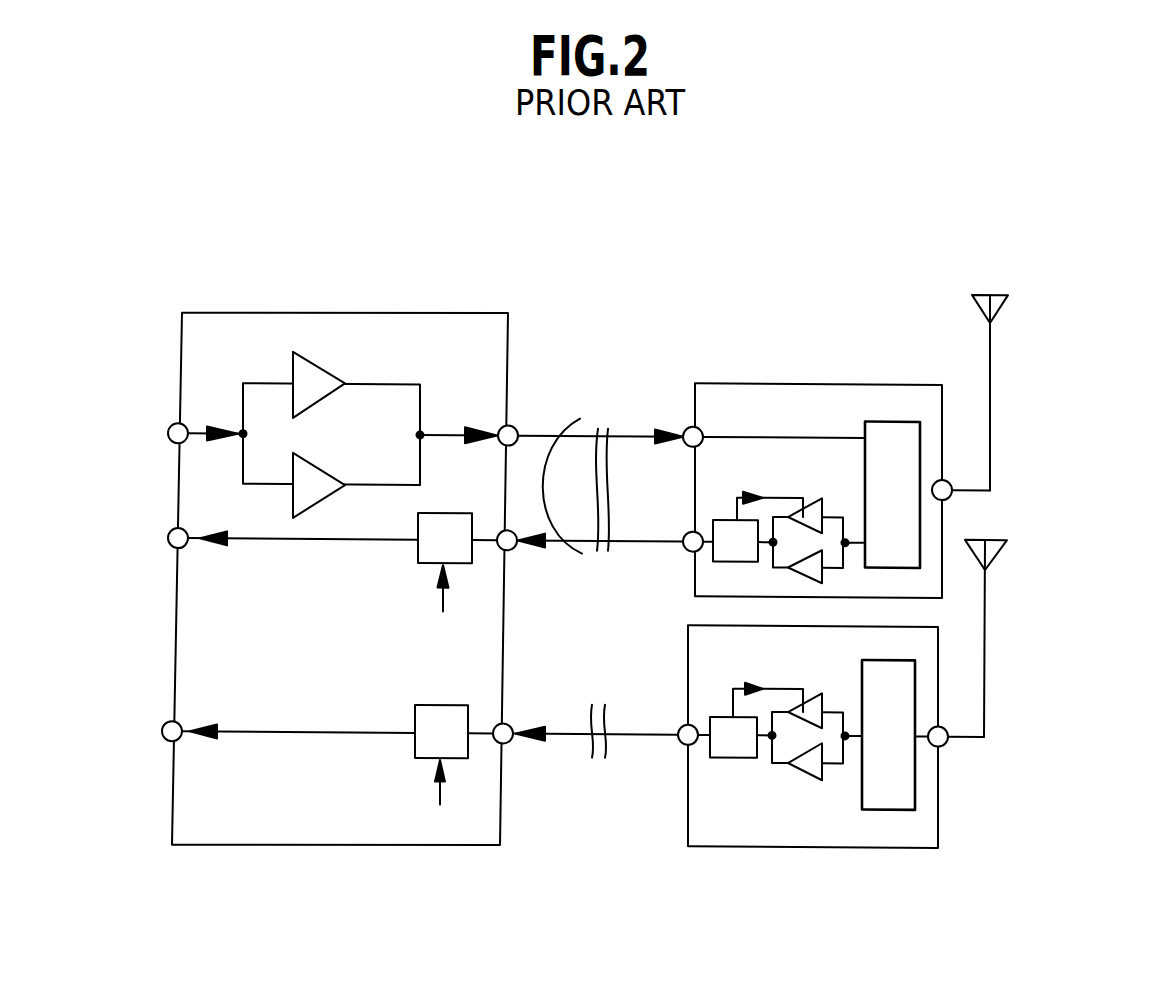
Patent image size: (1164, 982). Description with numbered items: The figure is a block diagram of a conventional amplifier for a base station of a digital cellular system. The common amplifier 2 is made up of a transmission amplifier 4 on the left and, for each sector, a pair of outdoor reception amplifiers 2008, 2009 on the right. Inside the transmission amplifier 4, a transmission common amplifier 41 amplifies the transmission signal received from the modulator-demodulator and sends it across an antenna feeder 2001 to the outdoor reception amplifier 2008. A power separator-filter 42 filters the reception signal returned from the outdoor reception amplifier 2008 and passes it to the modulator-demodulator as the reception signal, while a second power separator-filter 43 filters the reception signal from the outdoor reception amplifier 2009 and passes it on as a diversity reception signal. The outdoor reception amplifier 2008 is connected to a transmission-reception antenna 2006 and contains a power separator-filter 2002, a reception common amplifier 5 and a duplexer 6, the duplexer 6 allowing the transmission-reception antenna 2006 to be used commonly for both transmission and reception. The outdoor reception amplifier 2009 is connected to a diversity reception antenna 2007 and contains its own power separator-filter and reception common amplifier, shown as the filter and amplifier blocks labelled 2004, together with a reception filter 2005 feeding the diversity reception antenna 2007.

The common amplifier 2 is at (712, 295).
The transmission amplifier 4 is at (357, 553).
The transmission common amplifier 41 is at (271, 400).
The power separator-filter 42 is at (418, 566).
The power separator-filter 43 is at (413, 750).
The reception common amplifier 5 is at (795, 535).
The duplexer 6 is at (877, 420).
The antenna feeder 2001 is at (578, 417).
The power separator-filter 2002 is at (717, 563).
The receiving circuit 2004 is at (790, 743).
The reception filter 2005 is at (915, 799).
The transmission-reception antenna 2006 is at (1007, 304).
The diversity reception antenna 2007 is at (1005, 544).
The outdoor reception amplifier 2008 is at (768, 459).
The outdoor reception amplifier 2009 is at (827, 772).